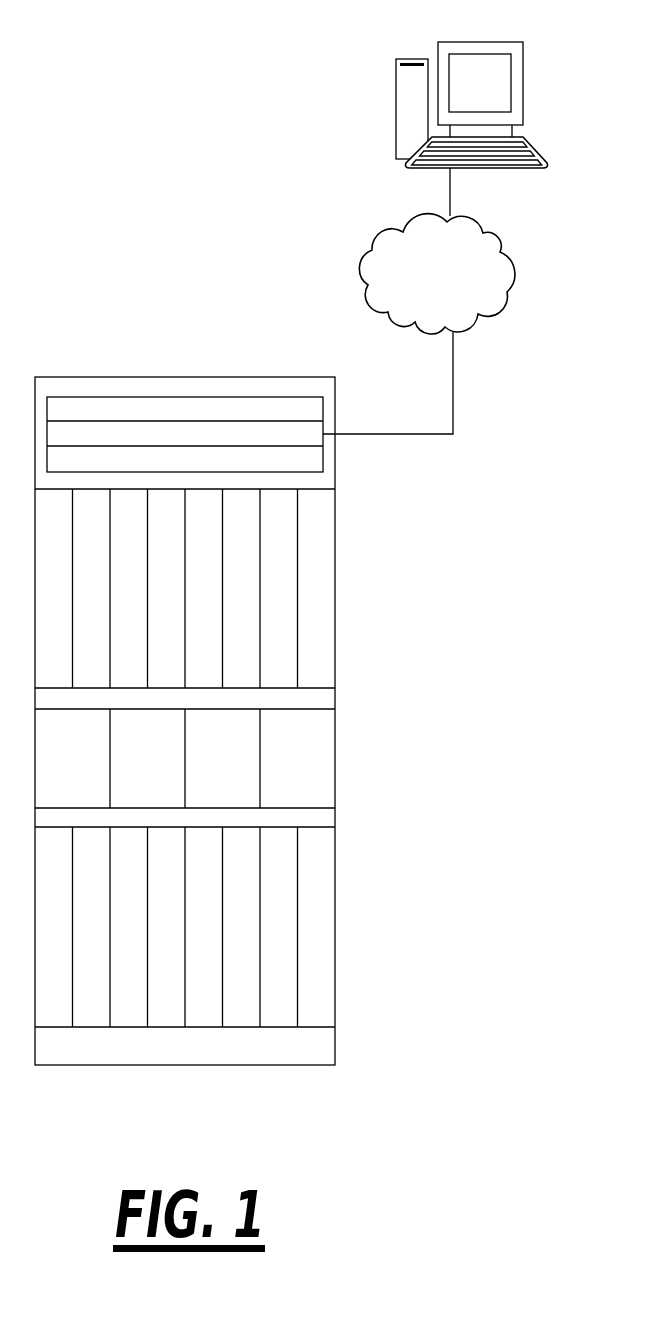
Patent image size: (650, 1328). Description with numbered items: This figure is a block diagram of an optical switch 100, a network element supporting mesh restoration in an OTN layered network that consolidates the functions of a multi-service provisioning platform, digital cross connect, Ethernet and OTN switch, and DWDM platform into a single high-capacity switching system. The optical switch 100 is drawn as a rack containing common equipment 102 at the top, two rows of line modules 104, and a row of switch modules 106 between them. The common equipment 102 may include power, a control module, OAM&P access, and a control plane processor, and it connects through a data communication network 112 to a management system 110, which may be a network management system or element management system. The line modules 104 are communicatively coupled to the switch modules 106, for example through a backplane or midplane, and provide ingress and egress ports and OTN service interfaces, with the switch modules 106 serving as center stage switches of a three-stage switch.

The optical switch 100 is at (132, 296).
The common equipment 102 is at (183, 395).
The line modules 104 is at (335, 552).
The switch modules 106 is at (336, 768).
The management system 110 is at (523, 92).
The data communication network 112 is at (460, 278).